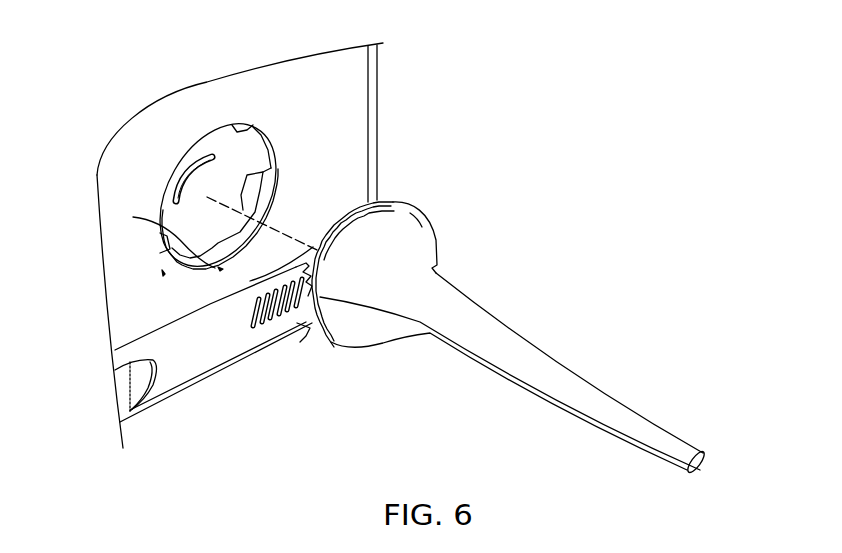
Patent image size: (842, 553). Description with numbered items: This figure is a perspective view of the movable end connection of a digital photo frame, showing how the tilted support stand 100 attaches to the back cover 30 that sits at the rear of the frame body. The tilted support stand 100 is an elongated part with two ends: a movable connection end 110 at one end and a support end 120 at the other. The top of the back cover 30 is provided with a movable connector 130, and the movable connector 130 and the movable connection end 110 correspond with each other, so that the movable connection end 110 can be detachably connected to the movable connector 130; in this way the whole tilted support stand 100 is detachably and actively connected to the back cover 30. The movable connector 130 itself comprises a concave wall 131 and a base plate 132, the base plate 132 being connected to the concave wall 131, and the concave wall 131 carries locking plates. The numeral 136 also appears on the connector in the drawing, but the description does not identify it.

The back cover 30 is at (345, 92).
The tilted support stand 100 is at (488, 365).
The movable connection end 110 is at (357, 208).
The support end 120 is at (701, 462).
The movable connector 130 is at (224, 141).
The concave wall 131 is at (133, 217).
The base plate 132 is at (247, 153).
The arc slot on knob 136 is at (191, 168).